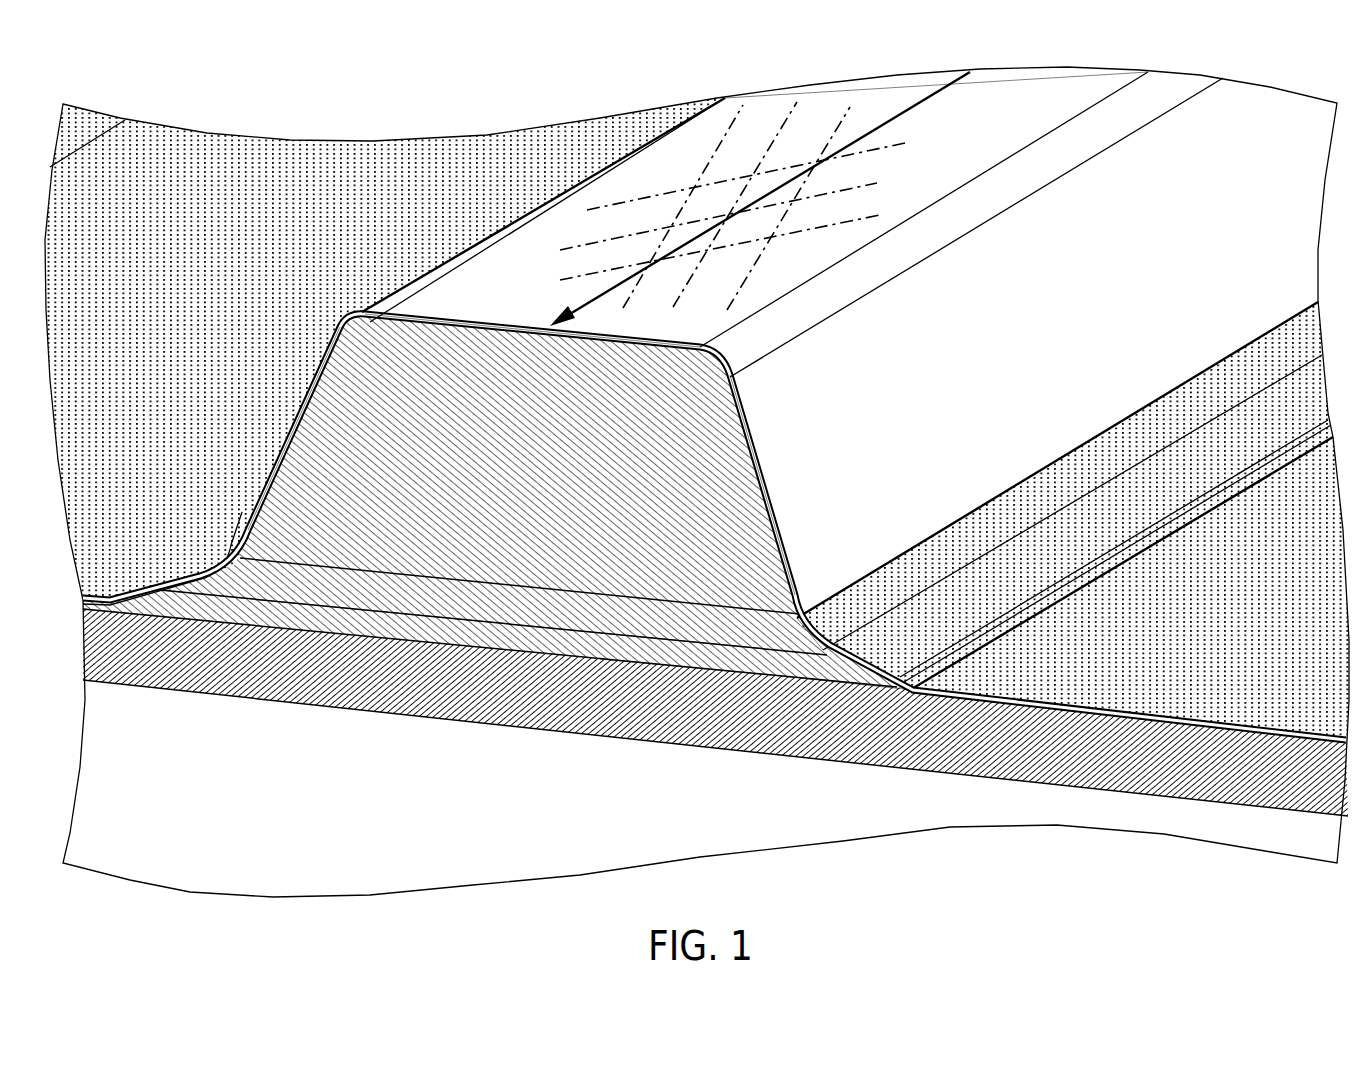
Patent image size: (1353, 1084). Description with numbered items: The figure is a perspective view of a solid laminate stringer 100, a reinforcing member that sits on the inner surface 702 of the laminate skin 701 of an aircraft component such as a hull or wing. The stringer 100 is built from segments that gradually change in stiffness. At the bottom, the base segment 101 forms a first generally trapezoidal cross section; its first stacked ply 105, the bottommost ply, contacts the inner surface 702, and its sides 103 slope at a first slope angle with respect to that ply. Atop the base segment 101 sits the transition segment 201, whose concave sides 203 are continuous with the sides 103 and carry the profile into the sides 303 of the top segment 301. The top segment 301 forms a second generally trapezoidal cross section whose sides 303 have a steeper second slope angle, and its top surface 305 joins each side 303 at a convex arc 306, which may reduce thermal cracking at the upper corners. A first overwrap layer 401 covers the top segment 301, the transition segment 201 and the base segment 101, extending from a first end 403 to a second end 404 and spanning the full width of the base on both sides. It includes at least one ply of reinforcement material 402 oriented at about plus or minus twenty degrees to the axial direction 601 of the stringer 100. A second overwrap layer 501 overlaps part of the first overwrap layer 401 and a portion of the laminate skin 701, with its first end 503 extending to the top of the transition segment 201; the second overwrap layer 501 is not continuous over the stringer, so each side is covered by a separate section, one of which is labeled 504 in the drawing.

The solid laminate stringer 100 is at (300, 108).
The base segment 101 is at (673, 655).
The sides 103 is at (157, 602).
The first stacked ply 105 is at (720, 673).
The transition segment 201 is at (617, 628).
The concave sides 203 is at (237, 567).
The top segment 301 is at (567, 573).
The sides 303 is at (275, 480).
The top surface 305 is at (560, 340).
The convex arc 306 is at (362, 322).
The first overwrap layer 401 is at (972, 413).
The ply of reinforcement material 402 is at (755, 272).
The first end 403 is at (910, 691).
The second end 404 is at (112, 603).
The second overwrap layer 501 is at (985, 554).
The first end 503 is at (797, 615).
The thin layer 504 is at (222, 567).
The axial direction 601 is at (567, 305).
The laminate skin 701 is at (473, 706).
The inner surface 702 is at (372, 642).